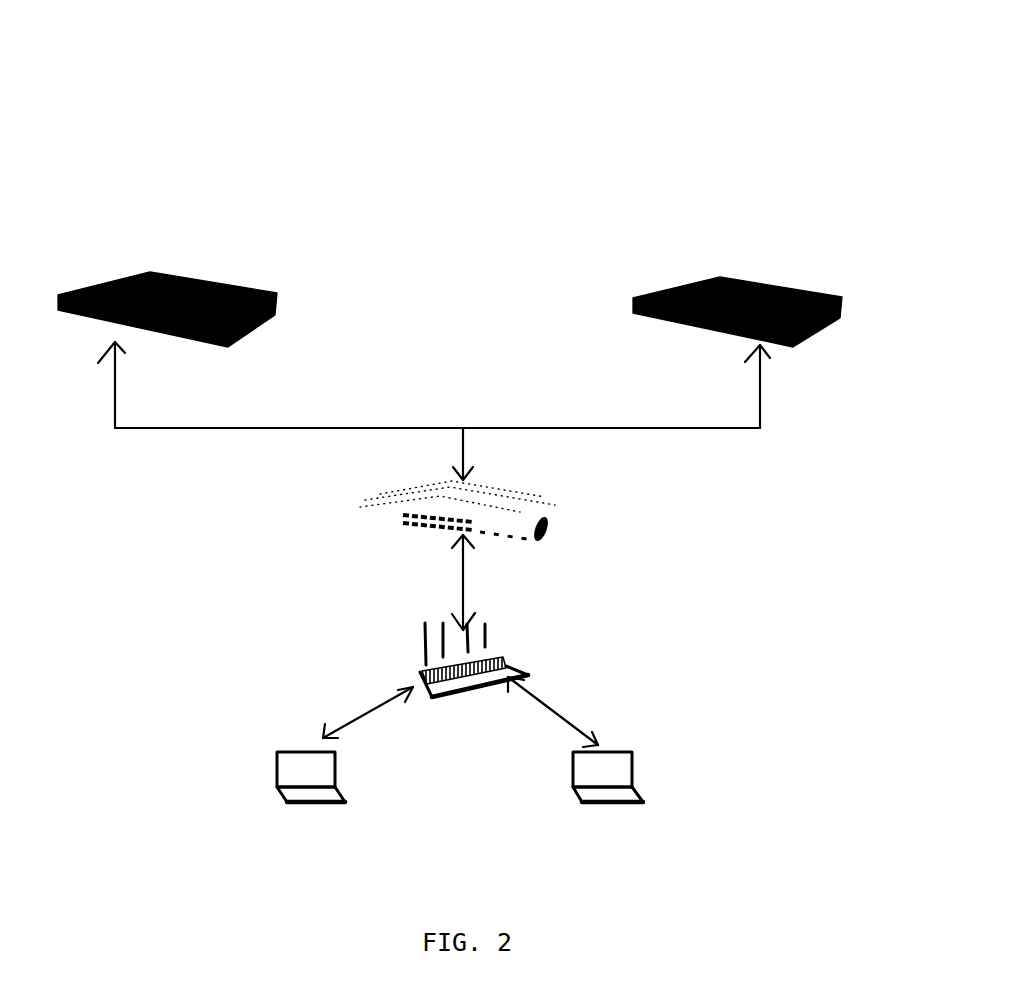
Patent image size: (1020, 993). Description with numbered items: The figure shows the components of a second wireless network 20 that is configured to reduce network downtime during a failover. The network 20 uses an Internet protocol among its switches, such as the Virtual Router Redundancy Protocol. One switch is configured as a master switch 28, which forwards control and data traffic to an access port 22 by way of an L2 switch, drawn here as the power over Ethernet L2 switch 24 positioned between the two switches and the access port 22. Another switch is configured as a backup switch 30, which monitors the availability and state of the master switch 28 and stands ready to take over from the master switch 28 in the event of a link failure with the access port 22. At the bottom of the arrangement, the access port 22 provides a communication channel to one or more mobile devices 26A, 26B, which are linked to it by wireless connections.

The second wireless network 20 is at (528, 95).
The access port 22 is at (523, 648).
The power over Ethernet L2 switch 24 is at (338, 517).
The mobile device 26A is at (255, 780).
The mobile device 26B is at (645, 768).
The master switch 28 is at (240, 277).
The backup switch 30 is at (797, 278).